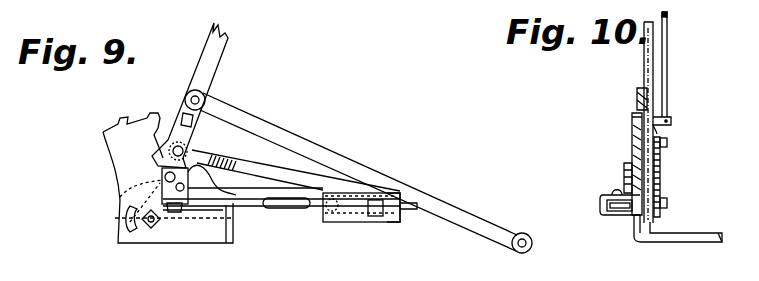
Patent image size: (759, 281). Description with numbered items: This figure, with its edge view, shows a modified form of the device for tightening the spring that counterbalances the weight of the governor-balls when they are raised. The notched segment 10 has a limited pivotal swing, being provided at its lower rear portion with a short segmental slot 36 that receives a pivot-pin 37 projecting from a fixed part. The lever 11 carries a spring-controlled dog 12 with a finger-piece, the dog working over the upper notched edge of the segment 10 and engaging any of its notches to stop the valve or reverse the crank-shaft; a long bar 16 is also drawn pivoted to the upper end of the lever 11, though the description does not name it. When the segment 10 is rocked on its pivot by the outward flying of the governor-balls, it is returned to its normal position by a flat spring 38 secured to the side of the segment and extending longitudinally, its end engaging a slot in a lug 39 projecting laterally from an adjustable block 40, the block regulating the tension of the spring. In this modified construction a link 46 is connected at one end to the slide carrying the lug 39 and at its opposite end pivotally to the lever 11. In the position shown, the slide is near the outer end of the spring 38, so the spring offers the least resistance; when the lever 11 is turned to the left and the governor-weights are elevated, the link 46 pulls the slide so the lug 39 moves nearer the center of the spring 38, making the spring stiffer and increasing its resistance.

In FIG. 9, the notched segment 10 is at (124, 152).
In FIG. 10, the notched segment 10 is at (633, 131).
In FIG. 9, the lever 11 is at (204, 46).
In FIG. 10, the lever 11 is at (645, 55).
In FIG. 9, the spring-controlled dog 12 is at (192, 123).
In FIG. 10, the spring-controlled dog 12 is at (672, 126).
In FIG. 9, the link 16 is at (310, 144).
In FIG. 10, the link 16 is at (637, 103).
In FIG. 9, the segmental slot 36 is at (138, 232).
In FIG. 9, the pivot-pin 37 is at (130, 217).
In FIG. 9, the flat spring 38 is at (262, 208).
In FIG. 10, the flat spring 38 is at (610, 212).
In FIG. 9, the lug 39 is at (372, 217).
In FIG. 10, the lug 39 is at (600, 200).
In FIG. 9, the adjustable block 40 is at (392, 223).
In FIG. 10, the adjustable block 40 is at (640, 222).
In FIG. 9, the link 46 is at (243, 176).
In FIG. 10, the link 46 is at (662, 166).